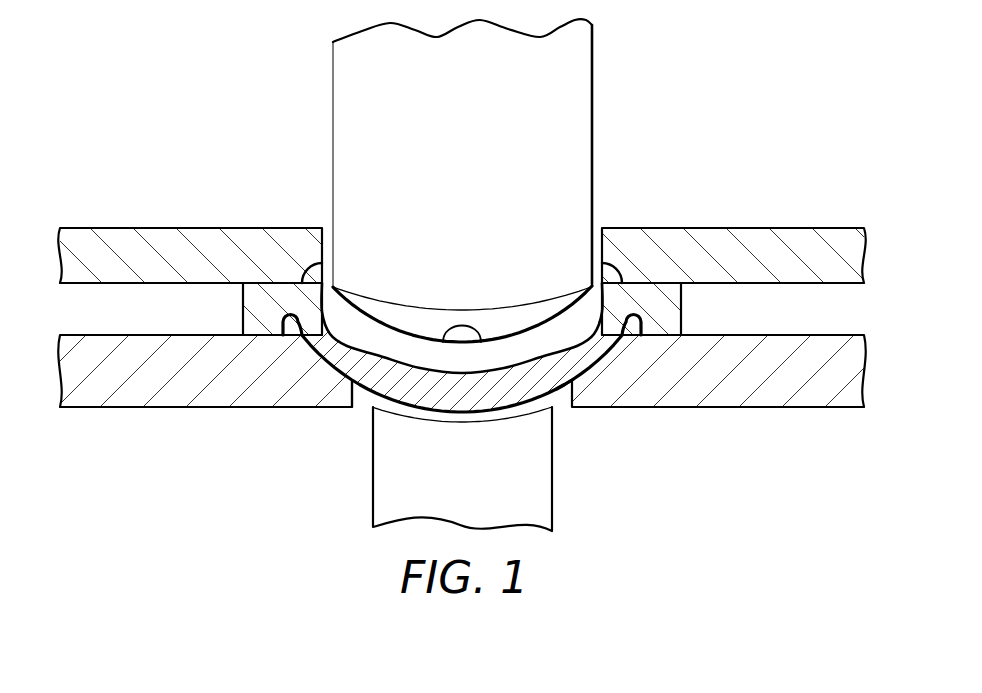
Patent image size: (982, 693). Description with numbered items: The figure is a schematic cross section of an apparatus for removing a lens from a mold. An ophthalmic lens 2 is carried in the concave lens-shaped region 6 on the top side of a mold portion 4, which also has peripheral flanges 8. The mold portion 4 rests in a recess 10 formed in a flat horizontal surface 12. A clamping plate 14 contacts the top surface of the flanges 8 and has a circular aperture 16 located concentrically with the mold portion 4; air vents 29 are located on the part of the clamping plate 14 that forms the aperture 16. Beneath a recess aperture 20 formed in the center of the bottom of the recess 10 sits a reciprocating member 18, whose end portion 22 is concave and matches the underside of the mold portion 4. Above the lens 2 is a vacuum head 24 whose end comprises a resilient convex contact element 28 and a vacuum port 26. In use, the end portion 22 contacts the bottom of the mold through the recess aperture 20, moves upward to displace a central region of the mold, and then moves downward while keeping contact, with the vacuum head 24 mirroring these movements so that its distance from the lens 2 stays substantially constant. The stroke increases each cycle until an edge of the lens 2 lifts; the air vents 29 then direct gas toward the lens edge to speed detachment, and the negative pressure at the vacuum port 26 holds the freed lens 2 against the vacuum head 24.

The ophthalmic lens 2 is at (513, 374).
The mold portion 4 is at (375, 383).
The concave lens-shaped region 6 is at (325, 372).
The peripheral flanges 8 is at (253, 310).
The recess 10 is at (603, 372).
The flat horizontal surface 12 is at (797, 398).
The clamping plate 14 is at (795, 237).
The circular aperture 16 is at (597, 235).
The reciprocating member 18 is at (540, 506).
The recess aperture 20 is at (561, 397).
The end portion 22 is at (463, 424).
The vacuum head 24 is at (588, 64).
The vacuum port 26 is at (462, 326).
The convex contact element 28 is at (534, 301).
The air vents 29 is at (313, 263).